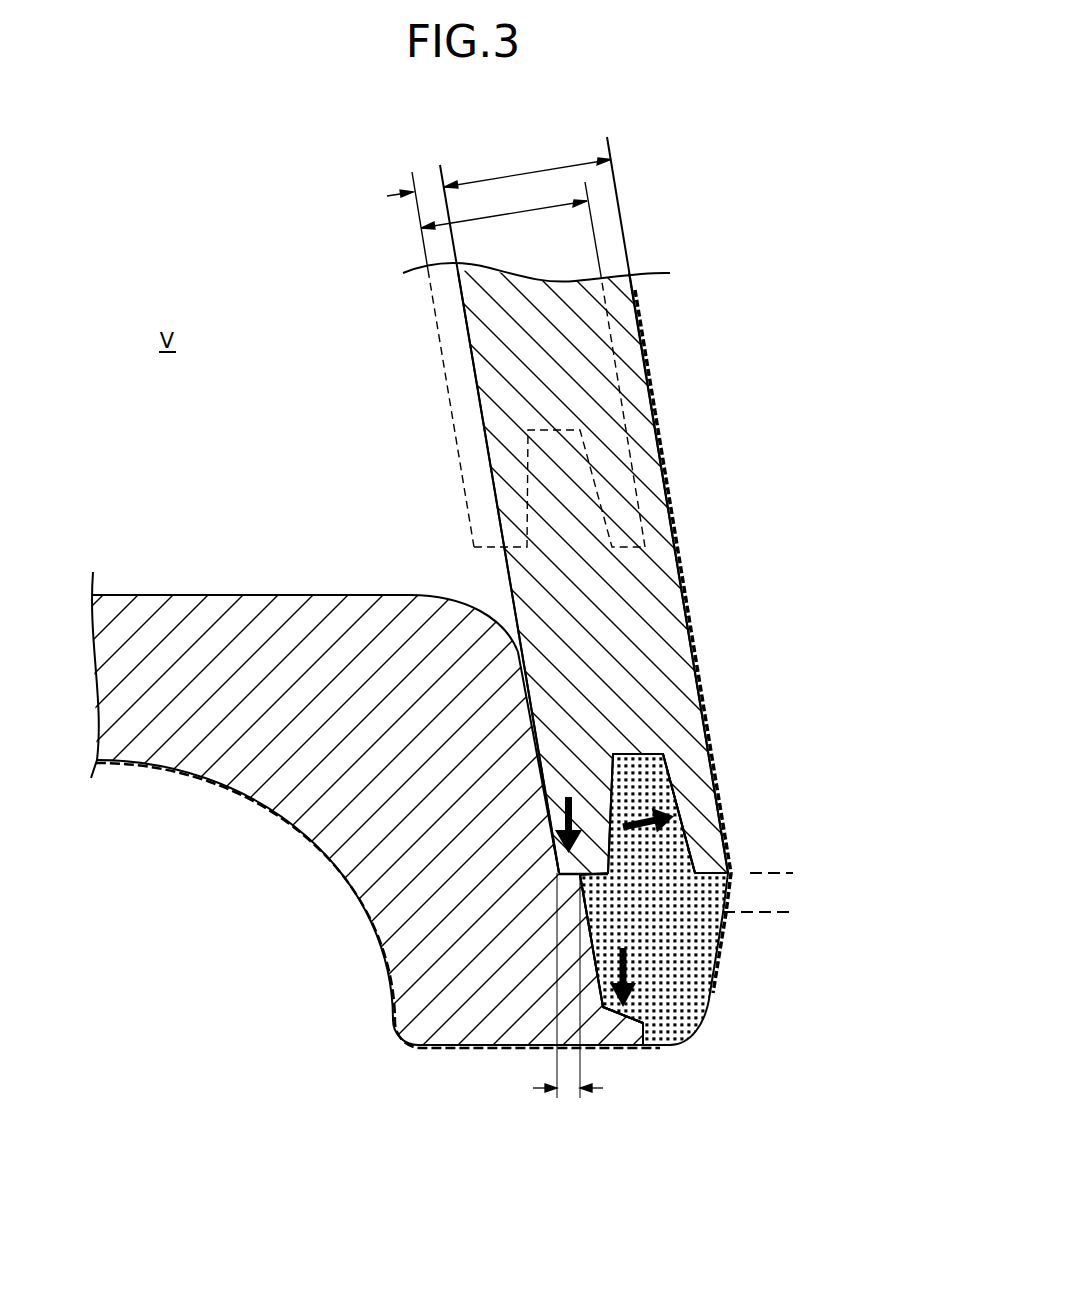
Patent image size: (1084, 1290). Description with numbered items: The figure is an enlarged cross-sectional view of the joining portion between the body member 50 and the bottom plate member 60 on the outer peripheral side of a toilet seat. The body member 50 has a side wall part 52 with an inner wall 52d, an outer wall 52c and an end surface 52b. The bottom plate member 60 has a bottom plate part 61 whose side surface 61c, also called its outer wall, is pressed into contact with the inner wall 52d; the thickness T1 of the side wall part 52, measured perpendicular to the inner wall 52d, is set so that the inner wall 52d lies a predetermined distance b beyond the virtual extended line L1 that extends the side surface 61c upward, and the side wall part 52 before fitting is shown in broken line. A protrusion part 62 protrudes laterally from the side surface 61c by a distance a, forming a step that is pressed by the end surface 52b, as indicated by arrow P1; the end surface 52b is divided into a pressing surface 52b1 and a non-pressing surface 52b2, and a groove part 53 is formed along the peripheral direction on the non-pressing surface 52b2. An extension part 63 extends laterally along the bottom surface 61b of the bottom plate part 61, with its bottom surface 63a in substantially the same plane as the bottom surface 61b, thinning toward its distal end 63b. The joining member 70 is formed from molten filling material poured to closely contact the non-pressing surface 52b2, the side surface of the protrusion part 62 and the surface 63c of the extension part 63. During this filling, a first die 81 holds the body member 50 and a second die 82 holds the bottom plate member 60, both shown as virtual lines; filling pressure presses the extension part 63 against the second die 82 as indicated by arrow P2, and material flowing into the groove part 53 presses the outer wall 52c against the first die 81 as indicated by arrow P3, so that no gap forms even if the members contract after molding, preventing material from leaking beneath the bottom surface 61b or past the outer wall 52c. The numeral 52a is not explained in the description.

The body member 50 is at (660, 363).
The side wall part 52 is at (633, 477).
The outer side surface 52a is at (650, 677).
The end surface 52b is at (842, 788).
The surface 52b1 is at (580, 875).
The non-pressing surface 52b2 is at (728, 873).
The outer wall 52c is at (667, 763).
The inner wall 52d is at (520, 707).
The groove part 53 is at (645, 755).
The bottom plate member 60 is at (160, 590).
The bottom plate part 61 is at (232, 627).
The bottom surface 61b is at (440, 1048).
The side surface 61c is at (547, 790).
The protrusion part 62 is at (530, 1048).
The extension part 63 is at (613, 1048).
The bottom surface 63a is at (603, 1047).
The distal end 63b is at (643, 1035).
The surface 63c is at (622, 1032).
The joining member 70 is at (700, 948).
The first die 81 is at (693, 575).
The second die 82 is at (383, 978).
The arrow P1 is at (573, 808).
The arrow P2 is at (623, 960).
The arrow P3 is at (637, 820).
The virtual extended line L1 is at (442, 163).
The thickness T1 is at (516, 187).
The distance a is at (568, 1100).
The predetermined distance b is at (415, 190).